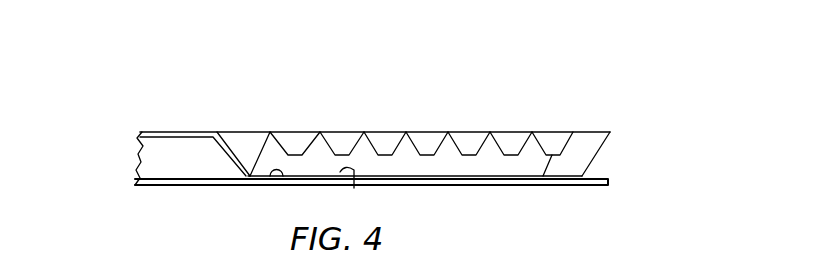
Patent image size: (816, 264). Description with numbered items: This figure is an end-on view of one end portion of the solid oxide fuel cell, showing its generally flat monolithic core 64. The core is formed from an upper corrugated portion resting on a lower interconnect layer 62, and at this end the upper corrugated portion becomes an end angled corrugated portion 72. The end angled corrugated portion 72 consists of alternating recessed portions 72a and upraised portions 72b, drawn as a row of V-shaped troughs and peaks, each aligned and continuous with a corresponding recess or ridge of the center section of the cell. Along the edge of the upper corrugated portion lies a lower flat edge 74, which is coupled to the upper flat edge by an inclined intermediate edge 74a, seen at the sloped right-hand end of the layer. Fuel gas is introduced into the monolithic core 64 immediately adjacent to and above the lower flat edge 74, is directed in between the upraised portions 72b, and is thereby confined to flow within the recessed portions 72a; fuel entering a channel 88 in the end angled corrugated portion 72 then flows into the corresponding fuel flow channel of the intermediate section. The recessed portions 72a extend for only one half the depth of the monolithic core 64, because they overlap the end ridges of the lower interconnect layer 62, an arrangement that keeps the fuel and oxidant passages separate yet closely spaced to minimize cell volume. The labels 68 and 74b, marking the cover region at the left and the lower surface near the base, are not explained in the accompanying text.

The base plate 62 is at (560, 186).
The laminated panel 64 is at (606, 116).
The cover layer 68 is at (182, 132).
The core layer 72 is at (143, 154).
The core channels 72a is at (472, 138).
The core channels 72b is at (367, 133).
The bottom layer 74 is at (264, 179).
The sloped end of bottom layer 74a is at (577, 152).
The bottom layer flat portion 74b is at (354, 188).
The grooves 88 is at (557, 140).